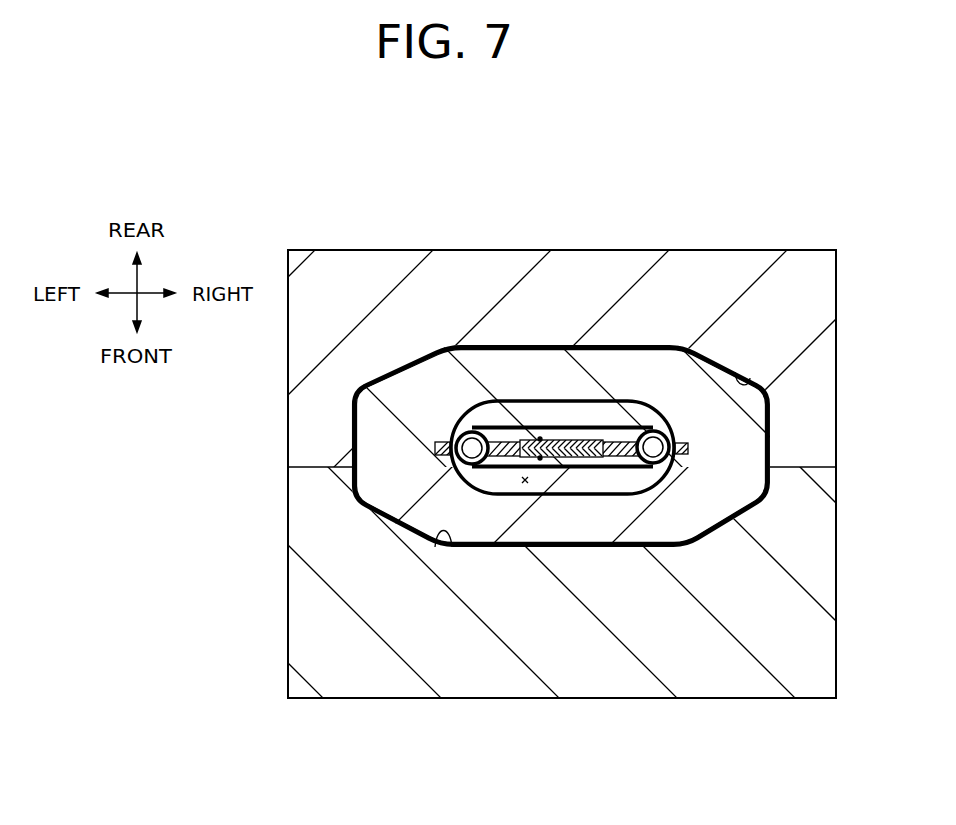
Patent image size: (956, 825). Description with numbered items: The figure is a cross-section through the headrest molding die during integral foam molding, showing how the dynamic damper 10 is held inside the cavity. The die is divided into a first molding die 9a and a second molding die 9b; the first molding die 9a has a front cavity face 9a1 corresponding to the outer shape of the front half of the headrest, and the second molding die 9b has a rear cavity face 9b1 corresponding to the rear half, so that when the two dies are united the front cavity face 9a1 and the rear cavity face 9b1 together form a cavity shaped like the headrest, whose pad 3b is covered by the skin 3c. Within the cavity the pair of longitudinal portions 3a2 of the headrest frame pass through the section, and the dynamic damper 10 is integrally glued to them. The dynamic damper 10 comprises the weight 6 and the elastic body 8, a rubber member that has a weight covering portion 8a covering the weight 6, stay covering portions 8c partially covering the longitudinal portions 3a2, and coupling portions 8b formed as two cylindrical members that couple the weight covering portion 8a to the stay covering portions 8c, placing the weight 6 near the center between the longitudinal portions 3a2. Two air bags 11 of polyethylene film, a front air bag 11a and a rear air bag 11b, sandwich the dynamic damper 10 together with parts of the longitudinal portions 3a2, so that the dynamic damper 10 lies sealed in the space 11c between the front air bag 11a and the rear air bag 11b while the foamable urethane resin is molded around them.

The pad 3b is at (390, 390).
The skin 3c is at (423, 347).
The longitudinal portions 3a2 is at (471, 420).
The weight 6 is at (593, 462).
The elastic body 8 is at (591, 462).
The weight covering portion 8a is at (593, 427).
The coupling portions 8b is at (620, 440).
The stay covering portions 8c is at (648, 433).
The first molding die 9a is at (813, 678).
The front cavity face 9a1 is at (433, 547).
The second molding die 9b is at (315, 297).
The rear cavity face 9b1 is at (760, 372).
The dynamic damper 10 is at (567, 458).
The air bags 11 is at (591, 480).
The front air bag 11a is at (658, 470).
The rear air bag 11b is at (523, 402).
The space 11c is at (525, 486).